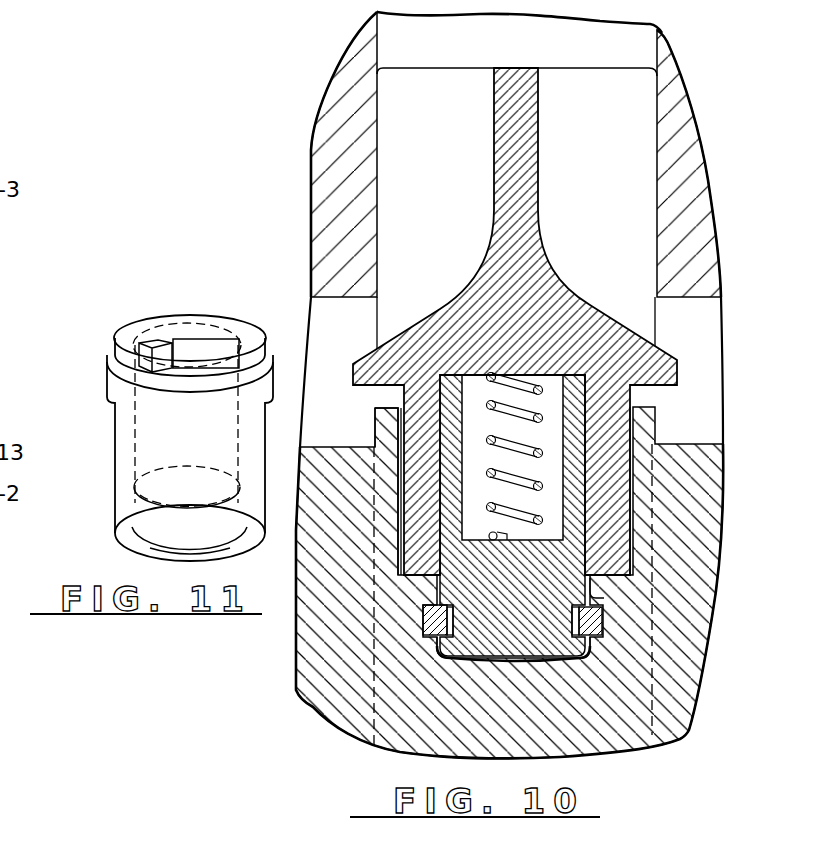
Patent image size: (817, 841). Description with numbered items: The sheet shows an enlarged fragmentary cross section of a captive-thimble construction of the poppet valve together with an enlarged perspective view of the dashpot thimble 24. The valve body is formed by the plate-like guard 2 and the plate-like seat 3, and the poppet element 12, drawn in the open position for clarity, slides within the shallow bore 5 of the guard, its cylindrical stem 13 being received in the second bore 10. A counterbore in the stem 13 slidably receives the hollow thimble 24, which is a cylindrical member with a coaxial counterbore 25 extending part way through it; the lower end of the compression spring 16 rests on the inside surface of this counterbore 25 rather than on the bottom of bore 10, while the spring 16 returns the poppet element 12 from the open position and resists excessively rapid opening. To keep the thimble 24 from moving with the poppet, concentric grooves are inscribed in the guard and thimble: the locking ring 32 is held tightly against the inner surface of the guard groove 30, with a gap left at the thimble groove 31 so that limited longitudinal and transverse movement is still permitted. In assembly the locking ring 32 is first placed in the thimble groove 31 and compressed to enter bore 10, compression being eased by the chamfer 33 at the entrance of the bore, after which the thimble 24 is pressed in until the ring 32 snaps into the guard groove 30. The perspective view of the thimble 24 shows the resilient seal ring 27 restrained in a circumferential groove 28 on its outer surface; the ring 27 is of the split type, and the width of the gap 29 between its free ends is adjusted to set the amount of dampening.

In FIG. 10, the guard 2 is at (706, 530).
In FIG. 10, the seat 3 is at (706, 266).
In FIG. 10, the bore 5 is at (399, 418).
In FIG. 10, the bore 10 is at (598, 602).
In FIG. 10, the poppet element 12 is at (443, 300).
In FIG. 10, the stem 13 is at (620, 492).
In FIG. 10, the compression spring 16 is at (543, 447).
In FIG. 10, the thimble 24 is at (557, 650).
In FIG. 11, the thimble 24 is at (211, 553).
In FIG. 11, the counterbore 25 is at (160, 420).
In FIG. 11, the seal ring 27 is at (115, 373).
In FIG. 11, the circumferential groove 28 is at (153, 347).
In FIG. 11, the gap 29 is at (163, 360).
In FIG. 10, the guard groove 30 is at (425, 617).
In FIG. 10, the thimble groove 31 is at (443, 640).
In FIG. 10, the locking ring 32 is at (608, 622).
In FIG. 10, the chamfer 33 is at (598, 591).